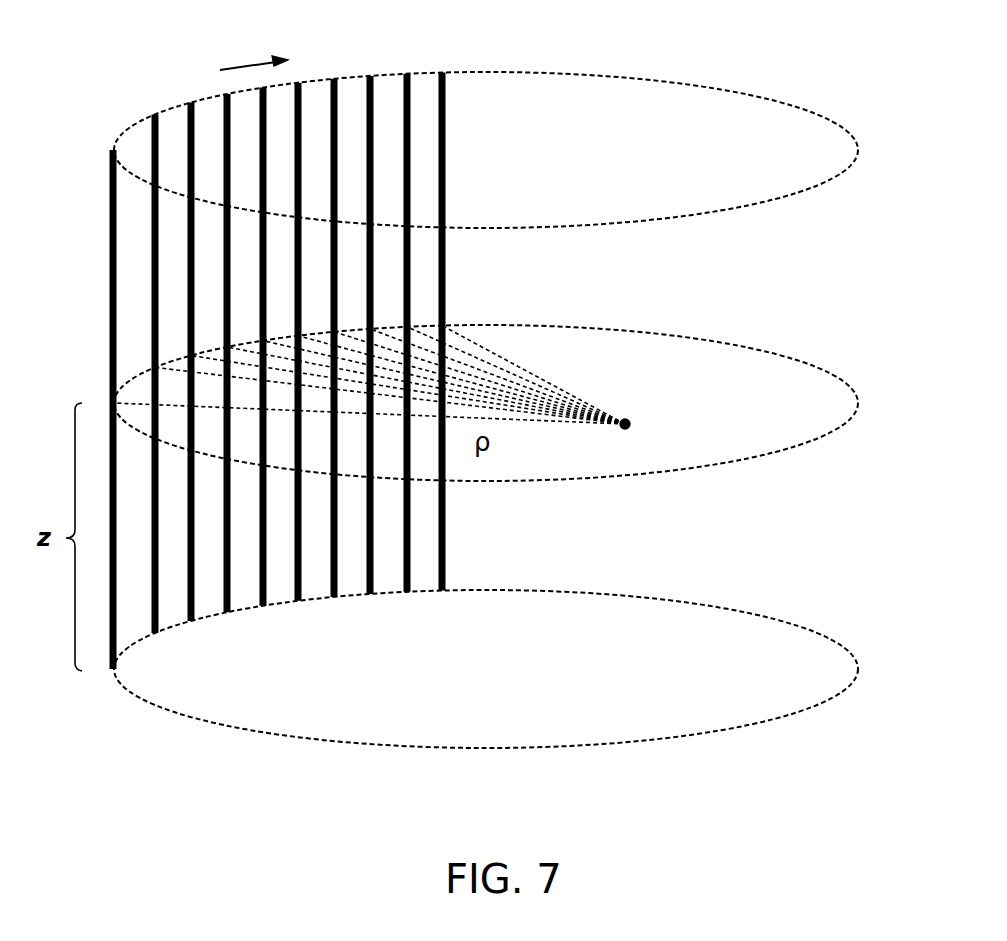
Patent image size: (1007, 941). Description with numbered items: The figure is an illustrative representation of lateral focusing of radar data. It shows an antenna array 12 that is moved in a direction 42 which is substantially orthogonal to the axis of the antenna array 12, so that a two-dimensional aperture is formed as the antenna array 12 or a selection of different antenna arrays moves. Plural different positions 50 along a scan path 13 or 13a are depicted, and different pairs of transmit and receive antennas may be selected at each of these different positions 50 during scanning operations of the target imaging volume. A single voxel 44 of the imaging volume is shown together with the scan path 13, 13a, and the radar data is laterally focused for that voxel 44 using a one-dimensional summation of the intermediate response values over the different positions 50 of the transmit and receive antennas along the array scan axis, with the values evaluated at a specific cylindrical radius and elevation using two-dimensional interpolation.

The antenna array 12 is at (110, 288).
The scan path 13 is at (486, 125).
The scan path 13a is at (630, 77).
The direction 42 is at (247, 62).
The voxel 44 is at (628, 418).
The different positions 50 is at (407, 73).